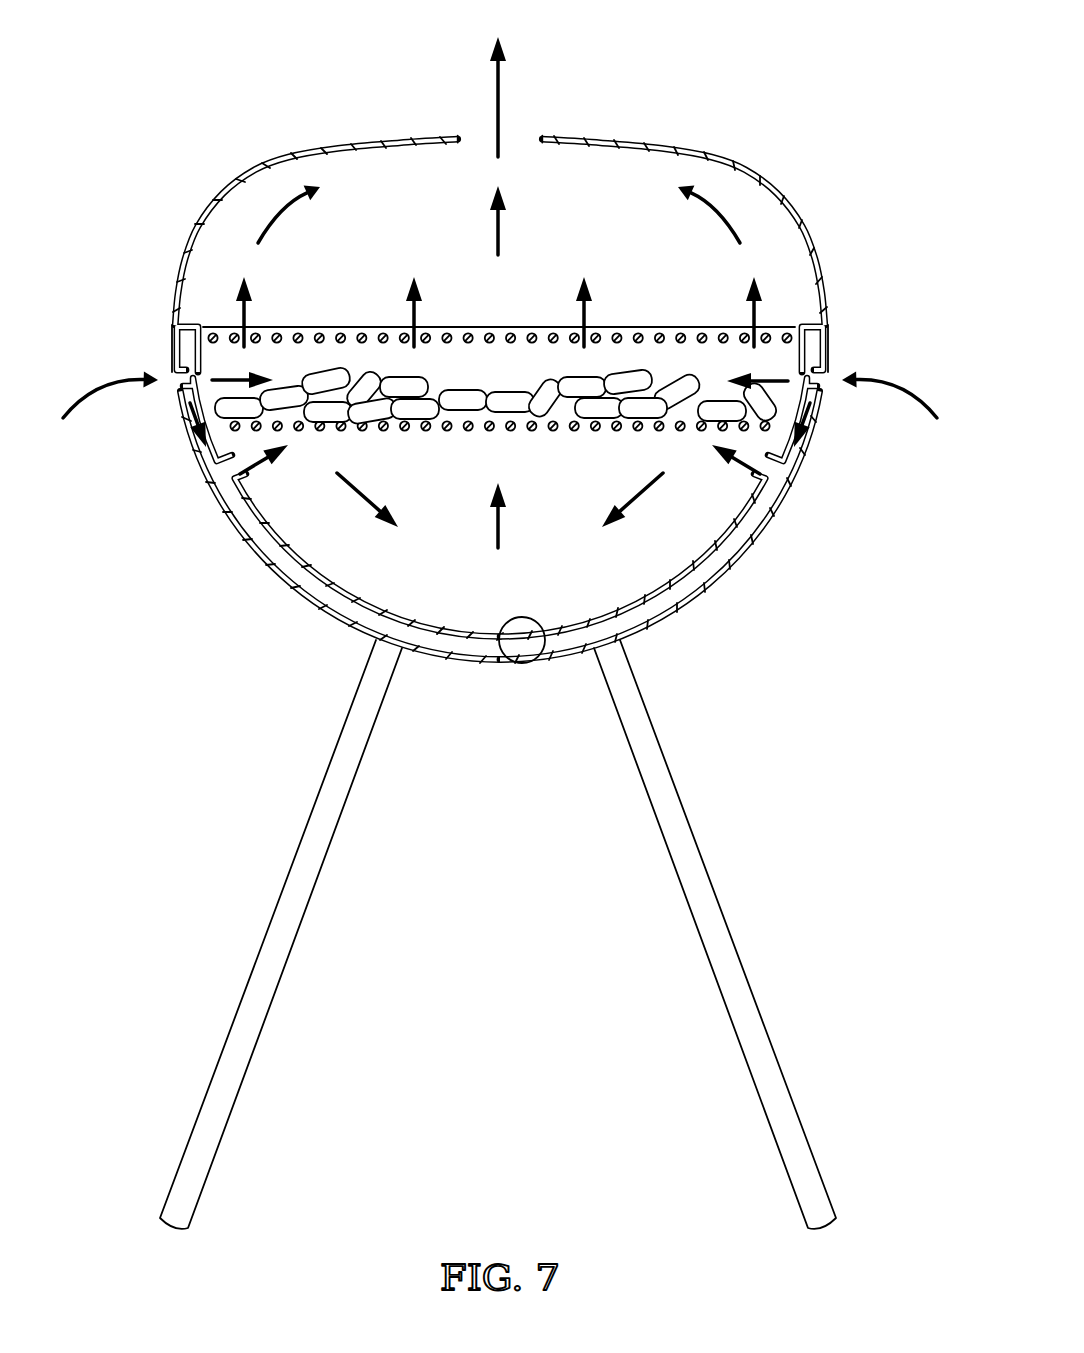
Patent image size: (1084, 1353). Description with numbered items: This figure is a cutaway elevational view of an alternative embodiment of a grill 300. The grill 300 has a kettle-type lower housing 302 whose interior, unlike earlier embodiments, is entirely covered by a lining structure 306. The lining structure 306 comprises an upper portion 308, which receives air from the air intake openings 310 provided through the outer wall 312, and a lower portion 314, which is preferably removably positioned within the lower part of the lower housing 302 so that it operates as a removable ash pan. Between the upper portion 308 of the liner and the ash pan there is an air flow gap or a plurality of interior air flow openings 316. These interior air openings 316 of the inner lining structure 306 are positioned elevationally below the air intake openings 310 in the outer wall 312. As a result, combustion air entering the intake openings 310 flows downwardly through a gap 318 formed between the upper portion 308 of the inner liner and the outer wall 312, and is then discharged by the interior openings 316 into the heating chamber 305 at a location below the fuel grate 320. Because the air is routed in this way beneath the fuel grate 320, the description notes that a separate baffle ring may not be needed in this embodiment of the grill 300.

The grill 300 is at (843, 44).
The lower housing 302 is at (228, 524).
The heating chamber 305 is at (524, 372).
The lining structure 306 is at (342, 598).
The upper portion 308 is at (846, 345).
The air intake openings 310 is at (160, 394).
The outer wall 312 is at (782, 523).
The lower portion 314 is at (527, 664).
The interior air flow openings 316 is at (262, 478).
The gap 318 is at (735, 560).
The fuel grate 320 is at (560, 428).